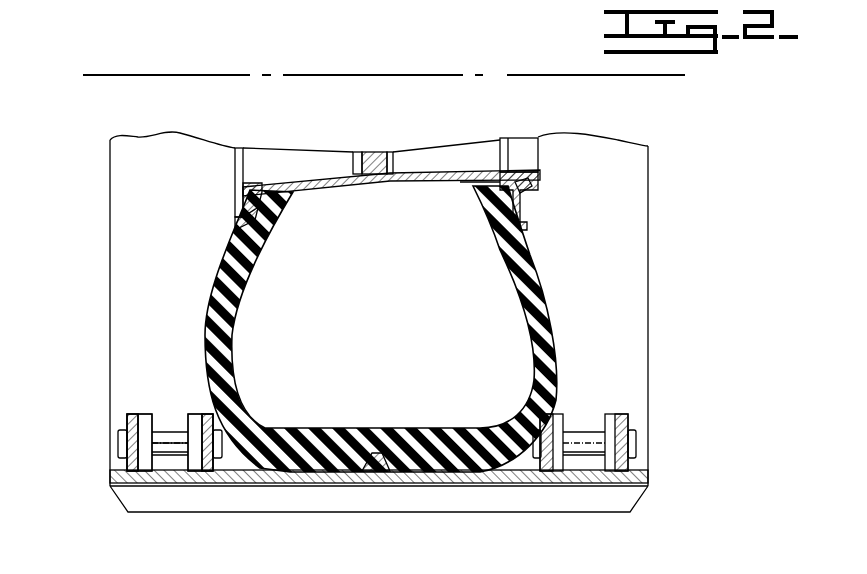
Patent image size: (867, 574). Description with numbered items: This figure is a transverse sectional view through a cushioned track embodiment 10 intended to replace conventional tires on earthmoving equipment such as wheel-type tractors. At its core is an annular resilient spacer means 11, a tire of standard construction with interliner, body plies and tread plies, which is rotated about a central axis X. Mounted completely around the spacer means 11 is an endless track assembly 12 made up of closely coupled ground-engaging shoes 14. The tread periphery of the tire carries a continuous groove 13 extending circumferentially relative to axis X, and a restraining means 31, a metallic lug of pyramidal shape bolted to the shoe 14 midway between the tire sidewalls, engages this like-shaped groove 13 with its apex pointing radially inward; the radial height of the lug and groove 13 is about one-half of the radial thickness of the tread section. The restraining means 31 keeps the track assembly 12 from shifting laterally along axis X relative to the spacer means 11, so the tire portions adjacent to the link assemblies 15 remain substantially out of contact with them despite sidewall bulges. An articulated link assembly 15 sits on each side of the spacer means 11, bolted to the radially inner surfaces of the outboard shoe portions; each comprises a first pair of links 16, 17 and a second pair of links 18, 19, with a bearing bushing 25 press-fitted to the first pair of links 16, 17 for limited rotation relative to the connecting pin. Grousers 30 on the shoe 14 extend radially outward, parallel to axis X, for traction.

The central axis X is at (648, 77).
The cushioned track embodiment 10 is at (668, 233).
The annular resilient spacer means 11 is at (540, 300).
The endless track assembly 12 is at (655, 373).
The continuous groove 13 is at (395, 457).
The ground-engaging shoes 14 is at (643, 480).
The articulated link assembly 15 is at (112, 430).
The first pair of links 16 is at (195, 463).
The first pair of links 17 is at (143, 463).
The second pair of links 18 is at (203, 465).
The second pair of links 19 is at (130, 423).
The bearing bushing 25 is at (167, 433).
The grousers 30 is at (513, 500).
The restraining means 31 is at (373, 470).